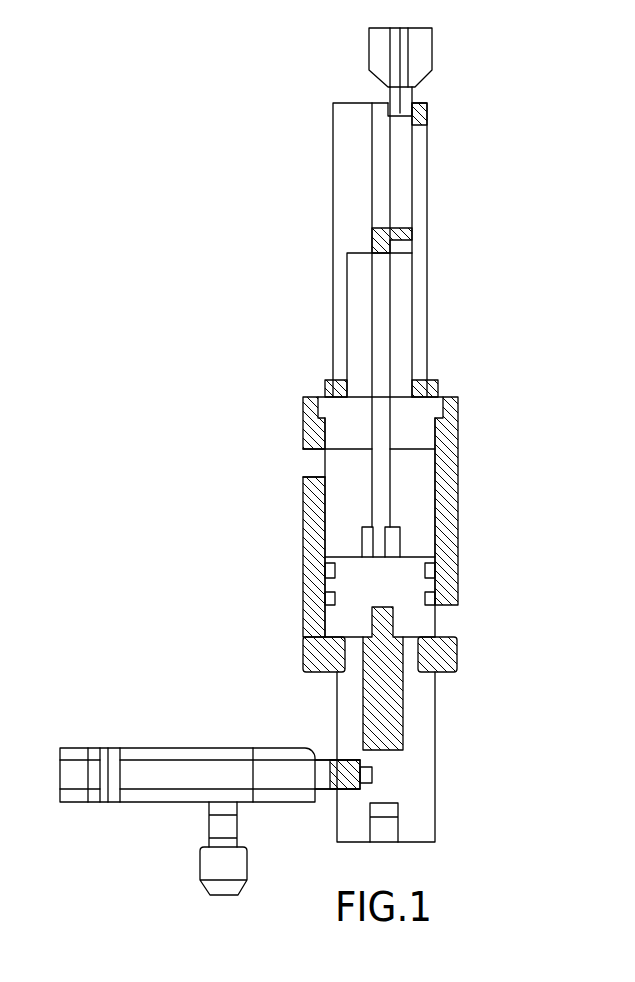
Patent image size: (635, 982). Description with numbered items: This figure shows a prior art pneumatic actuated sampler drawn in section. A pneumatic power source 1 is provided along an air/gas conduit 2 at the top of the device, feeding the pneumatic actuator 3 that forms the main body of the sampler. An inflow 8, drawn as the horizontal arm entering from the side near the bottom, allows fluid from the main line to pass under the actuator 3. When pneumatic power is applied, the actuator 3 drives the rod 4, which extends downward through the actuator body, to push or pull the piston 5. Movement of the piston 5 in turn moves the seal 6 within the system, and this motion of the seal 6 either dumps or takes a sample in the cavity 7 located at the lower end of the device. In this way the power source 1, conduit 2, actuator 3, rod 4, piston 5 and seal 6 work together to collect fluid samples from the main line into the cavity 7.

The pneumatic power source 1 is at (433, 70).
The air/gas conduit 2 is at (410, 28).
The pneumatic actuator 3 is at (516, 404).
The rod 4 is at (391, 487).
The piston 5 is at (347, 502).
The seal 6 is at (432, 620).
The cavity 7 is at (412, 628).
The inflow 8 is at (312, 745).